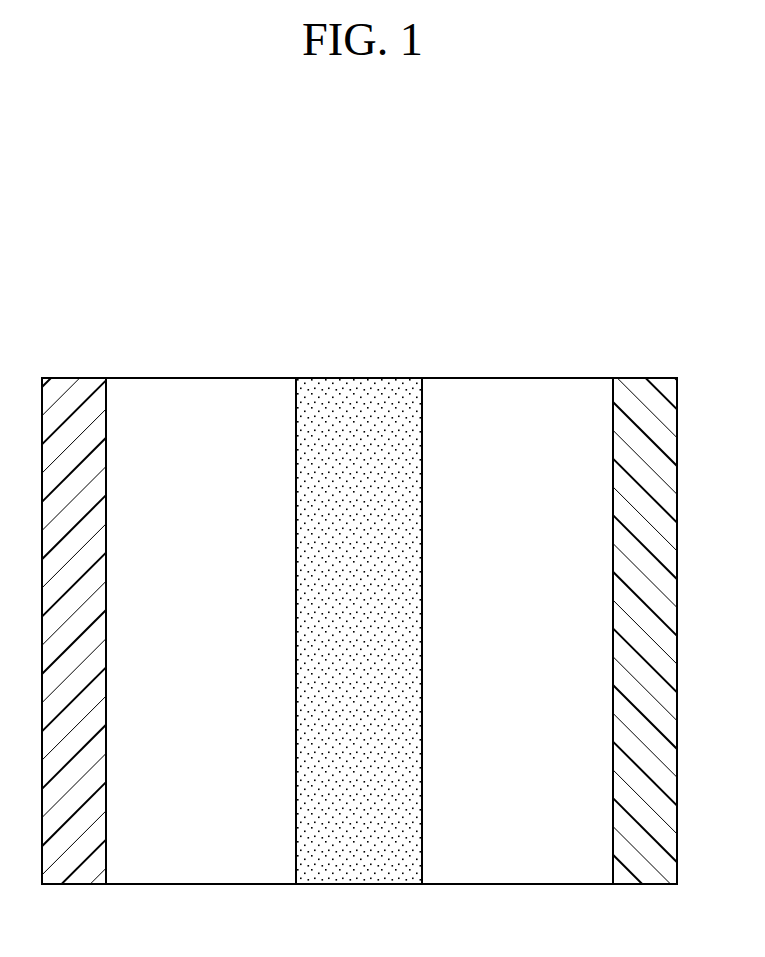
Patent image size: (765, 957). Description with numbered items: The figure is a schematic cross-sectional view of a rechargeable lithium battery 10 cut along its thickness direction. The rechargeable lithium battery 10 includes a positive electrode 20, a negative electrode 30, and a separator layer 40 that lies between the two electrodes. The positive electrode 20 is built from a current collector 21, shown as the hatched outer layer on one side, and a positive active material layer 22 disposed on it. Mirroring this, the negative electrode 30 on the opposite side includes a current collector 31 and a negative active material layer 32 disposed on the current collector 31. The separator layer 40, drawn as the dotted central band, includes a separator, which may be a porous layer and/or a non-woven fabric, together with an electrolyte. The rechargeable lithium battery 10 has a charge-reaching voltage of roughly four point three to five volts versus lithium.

The rechargeable lithium battery 10 is at (468, 224).
The positive electrode 20 is at (183, 322).
The current collector 21 is at (74, 390).
The positive active material layer 22 is at (169, 391).
The negative electrode 30 is at (652, 321).
The current collector 31 is at (637, 388).
The negative active material layer 32 is at (545, 389).
The separator layer 40 is at (358, 392).